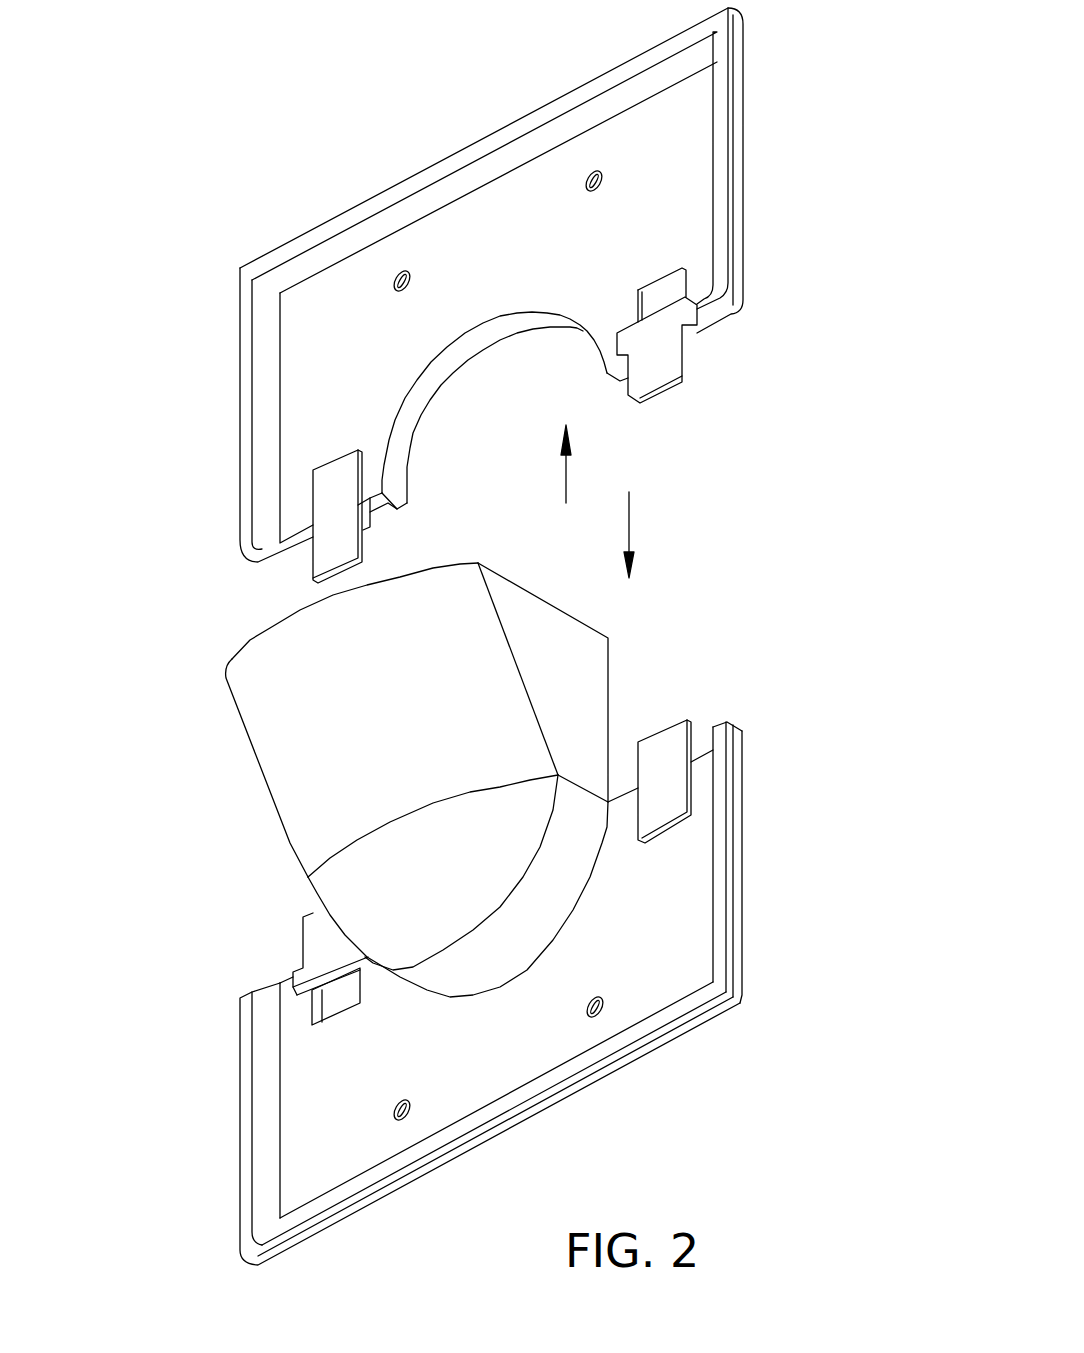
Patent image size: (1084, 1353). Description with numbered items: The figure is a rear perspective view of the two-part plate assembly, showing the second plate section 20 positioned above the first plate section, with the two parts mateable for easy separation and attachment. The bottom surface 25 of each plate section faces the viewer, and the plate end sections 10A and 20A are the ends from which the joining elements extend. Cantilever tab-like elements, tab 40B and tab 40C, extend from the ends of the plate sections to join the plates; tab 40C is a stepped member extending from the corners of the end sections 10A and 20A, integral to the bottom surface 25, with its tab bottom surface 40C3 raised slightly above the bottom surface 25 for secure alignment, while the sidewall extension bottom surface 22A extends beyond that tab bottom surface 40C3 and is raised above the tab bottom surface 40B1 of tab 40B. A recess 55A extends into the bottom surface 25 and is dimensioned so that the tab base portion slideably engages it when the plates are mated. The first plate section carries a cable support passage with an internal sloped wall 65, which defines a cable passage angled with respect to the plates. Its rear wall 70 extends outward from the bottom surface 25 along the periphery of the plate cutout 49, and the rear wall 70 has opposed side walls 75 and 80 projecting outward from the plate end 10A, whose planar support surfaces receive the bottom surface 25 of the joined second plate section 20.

The second plate section 20 is at (566, 285).
The sidewall extension bottom surface 22A is at (722, 33).
The bottom surface 25 is at (657, 150).
The recess 55A is at (662, 290).
The tab bottom surface 40B1 is at (658, 372).
The tab 40C is at (218, 596).
The plate end section 20A is at (540, 467).
The plate end section 10A is at (657, 530).
The side wall 75 is at (469, 870).
The internal sloped wall 65 is at (248, 694).
The side wall 80 is at (588, 668).
The rear wall 70 is at (570, 875).
The cutout 49 is at (505, 983).
The tab 40B is at (248, 965).
The tab bottom surface 40C3 is at (667, 753).